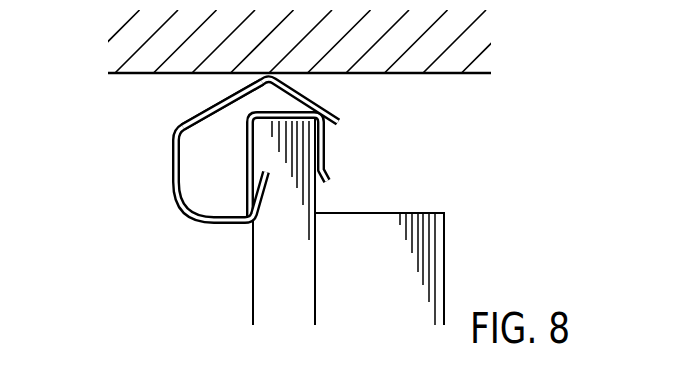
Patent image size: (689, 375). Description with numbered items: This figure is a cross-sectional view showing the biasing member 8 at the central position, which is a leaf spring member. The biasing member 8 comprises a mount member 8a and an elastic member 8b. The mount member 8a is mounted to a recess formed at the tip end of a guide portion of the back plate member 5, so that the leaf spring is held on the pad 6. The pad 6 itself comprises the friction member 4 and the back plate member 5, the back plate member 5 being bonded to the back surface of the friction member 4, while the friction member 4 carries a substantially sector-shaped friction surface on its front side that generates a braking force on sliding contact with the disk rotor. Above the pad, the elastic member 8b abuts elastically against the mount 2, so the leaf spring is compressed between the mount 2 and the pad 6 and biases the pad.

The mount 2 is at (413, 62).
The friction member 4 is at (350, 272).
The back plate member 5 is at (268, 243).
The pad 6 is at (281, 222).
The biasing member 8 is at (260, 149).
The mount member 8a is at (325, 157).
The elastic member 8b is at (208, 102).